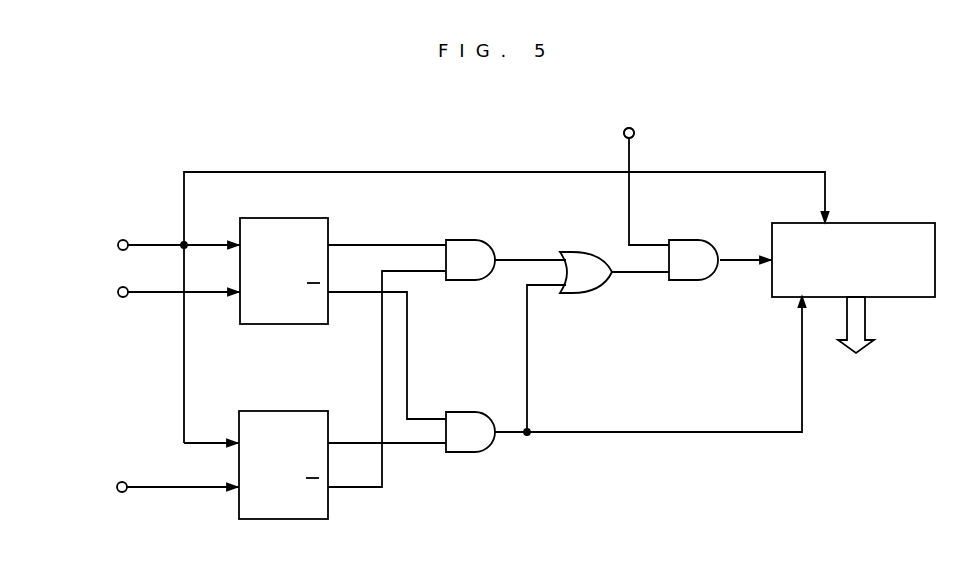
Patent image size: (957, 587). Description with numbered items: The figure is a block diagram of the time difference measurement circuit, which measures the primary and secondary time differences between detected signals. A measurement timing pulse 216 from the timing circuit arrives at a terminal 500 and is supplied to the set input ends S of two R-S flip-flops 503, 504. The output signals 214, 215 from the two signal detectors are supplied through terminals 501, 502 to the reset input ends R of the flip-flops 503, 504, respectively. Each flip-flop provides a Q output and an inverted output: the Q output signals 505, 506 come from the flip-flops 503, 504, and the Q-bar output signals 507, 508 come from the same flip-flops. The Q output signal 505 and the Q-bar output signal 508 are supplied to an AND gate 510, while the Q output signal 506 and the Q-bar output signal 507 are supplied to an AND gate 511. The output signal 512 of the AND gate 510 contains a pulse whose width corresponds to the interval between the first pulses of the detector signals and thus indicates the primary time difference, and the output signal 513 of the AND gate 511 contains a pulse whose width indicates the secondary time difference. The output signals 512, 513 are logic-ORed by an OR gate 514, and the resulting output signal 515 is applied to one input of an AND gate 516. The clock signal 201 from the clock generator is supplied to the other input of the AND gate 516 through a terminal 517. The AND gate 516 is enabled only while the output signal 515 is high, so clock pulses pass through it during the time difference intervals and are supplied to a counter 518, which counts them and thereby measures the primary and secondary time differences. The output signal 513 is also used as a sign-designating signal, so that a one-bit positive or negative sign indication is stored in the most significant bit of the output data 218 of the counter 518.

The terminal 500 is at (118, 245).
The terminal 501 is at (118, 292).
The terminal 502 is at (121, 487).
The R-S flip-flop 503 is at (291, 217).
The R-S flip-flop 504 is at (274, 409).
The Q output signal 505 is at (358, 243).
The Q output signal 506 is at (349, 440).
The Q-bar output signal 507 is at (404, 362).
The Q-bar output signal 508 is at (382, 472).
The AND gate 510 is at (469, 239).
The AND gate 511 is at (476, 453).
The output signal 512 is at (515, 263).
The output signal 513 is at (660, 430).
The OR gate 514 is at (575, 251).
The output signal 515 is at (641, 286).
The AND gate 516 is at (697, 240).
The terminal 517 is at (630, 127).
The counter 518 is at (878, 222).
The clock signal 201 is at (631, 160).
The output signal 214 is at (148, 296).
The output signal 215 is at (152, 484).
The measurement timing pulse 216 is at (153, 240).
The output data 218 is at (867, 323).